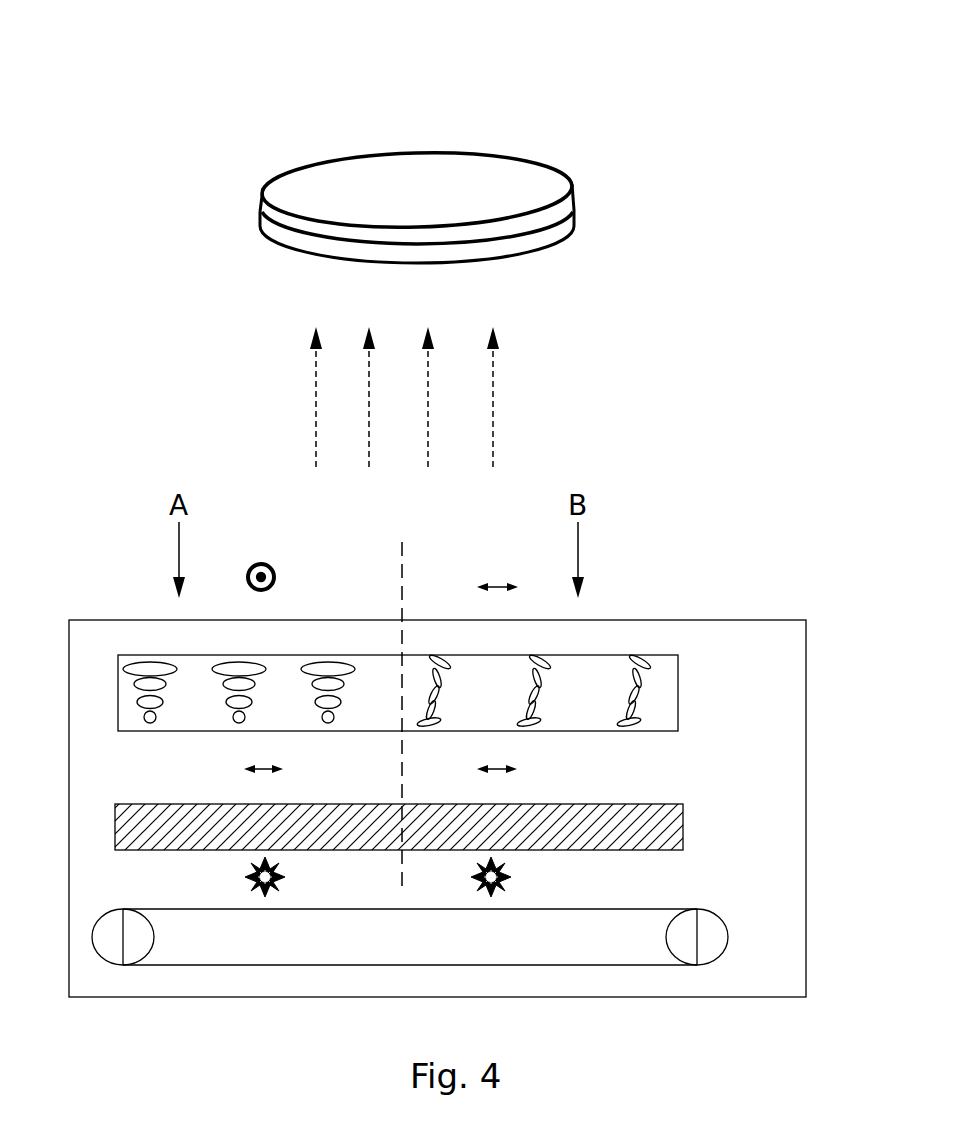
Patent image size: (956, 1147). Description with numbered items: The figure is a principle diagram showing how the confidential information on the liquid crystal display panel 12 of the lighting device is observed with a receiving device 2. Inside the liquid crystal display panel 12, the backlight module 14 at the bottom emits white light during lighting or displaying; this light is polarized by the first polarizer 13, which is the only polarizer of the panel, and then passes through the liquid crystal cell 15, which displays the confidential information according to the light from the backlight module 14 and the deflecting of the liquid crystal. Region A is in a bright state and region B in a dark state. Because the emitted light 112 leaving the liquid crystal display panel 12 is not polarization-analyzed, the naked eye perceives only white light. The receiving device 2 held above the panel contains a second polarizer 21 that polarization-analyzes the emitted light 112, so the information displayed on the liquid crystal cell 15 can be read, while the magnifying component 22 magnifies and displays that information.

The receiving device 2 is at (438, 169).
The second polarizer 21 is at (425, 271).
The magnifying component 22 is at (438, 183).
The emitted light 112 is at (376, 397).
The liquid crystal display panel 12 is at (437, 764).
The first polarizer 13 is at (428, 797).
The backlight module 14 is at (436, 908).
The liquid crystal cell 15 is at (426, 680).